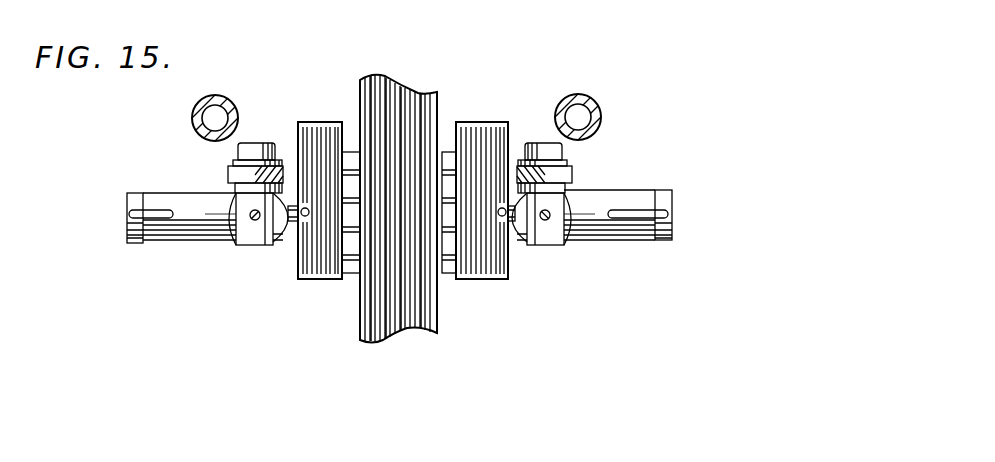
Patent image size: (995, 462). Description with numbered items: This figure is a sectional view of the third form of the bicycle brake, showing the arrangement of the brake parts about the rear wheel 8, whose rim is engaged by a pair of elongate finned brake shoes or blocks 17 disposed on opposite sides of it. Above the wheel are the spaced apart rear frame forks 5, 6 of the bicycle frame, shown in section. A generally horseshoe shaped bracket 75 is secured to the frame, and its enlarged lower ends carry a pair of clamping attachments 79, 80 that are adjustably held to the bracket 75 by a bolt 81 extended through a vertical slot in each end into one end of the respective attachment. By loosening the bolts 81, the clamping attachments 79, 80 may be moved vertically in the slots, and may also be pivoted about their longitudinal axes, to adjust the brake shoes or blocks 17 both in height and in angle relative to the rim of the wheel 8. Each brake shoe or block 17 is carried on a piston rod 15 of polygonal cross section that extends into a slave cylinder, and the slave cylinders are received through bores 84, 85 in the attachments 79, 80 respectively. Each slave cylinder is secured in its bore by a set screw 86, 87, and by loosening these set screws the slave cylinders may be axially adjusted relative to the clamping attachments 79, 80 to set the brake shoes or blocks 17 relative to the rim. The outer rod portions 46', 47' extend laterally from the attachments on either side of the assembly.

The rear frame fork 5 is at (216, 95).
The rear frame fork 6 is at (592, 97).
The rear wheel 8 is at (425, 95).
The piston rod 15 is at (300, 222).
The brake shoe or block 17 is at (337, 100).
The left arm rod 46' is at (180, 199).
The right arm rod 47' is at (626, 195).
The horseshoe shaped bracket 75 is at (229, 174).
The clamping attachment 79 is at (258, 246).
The clamping attachment 80 is at (545, 232).
The bolt 81 is at (281, 118).
The bore 84 is at (235, 230).
The bore 85 is at (536, 232).
The set screw 86 is at (250, 216).
The set screw 87 is at (567, 242).